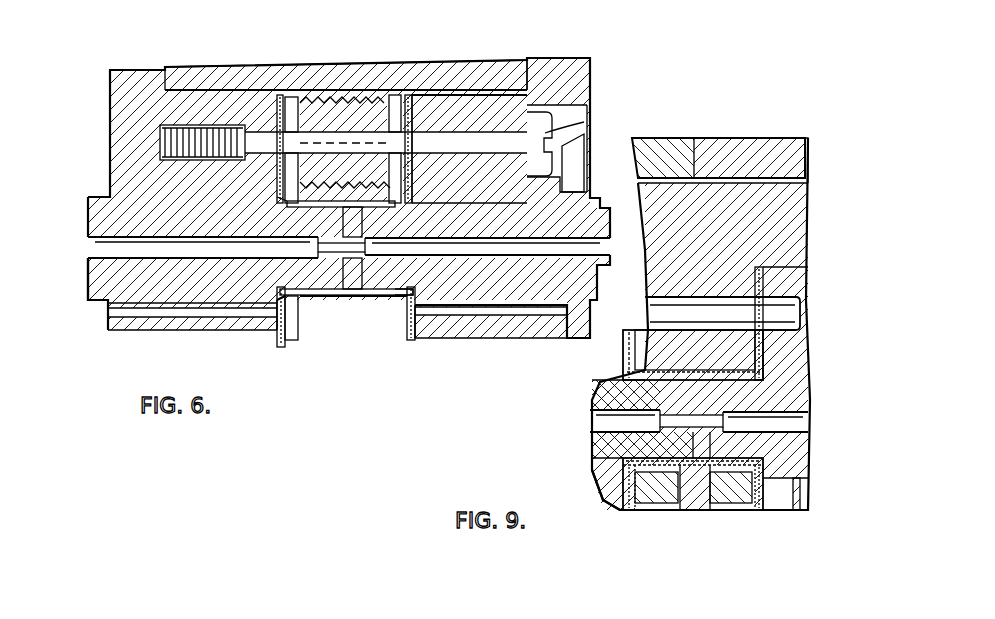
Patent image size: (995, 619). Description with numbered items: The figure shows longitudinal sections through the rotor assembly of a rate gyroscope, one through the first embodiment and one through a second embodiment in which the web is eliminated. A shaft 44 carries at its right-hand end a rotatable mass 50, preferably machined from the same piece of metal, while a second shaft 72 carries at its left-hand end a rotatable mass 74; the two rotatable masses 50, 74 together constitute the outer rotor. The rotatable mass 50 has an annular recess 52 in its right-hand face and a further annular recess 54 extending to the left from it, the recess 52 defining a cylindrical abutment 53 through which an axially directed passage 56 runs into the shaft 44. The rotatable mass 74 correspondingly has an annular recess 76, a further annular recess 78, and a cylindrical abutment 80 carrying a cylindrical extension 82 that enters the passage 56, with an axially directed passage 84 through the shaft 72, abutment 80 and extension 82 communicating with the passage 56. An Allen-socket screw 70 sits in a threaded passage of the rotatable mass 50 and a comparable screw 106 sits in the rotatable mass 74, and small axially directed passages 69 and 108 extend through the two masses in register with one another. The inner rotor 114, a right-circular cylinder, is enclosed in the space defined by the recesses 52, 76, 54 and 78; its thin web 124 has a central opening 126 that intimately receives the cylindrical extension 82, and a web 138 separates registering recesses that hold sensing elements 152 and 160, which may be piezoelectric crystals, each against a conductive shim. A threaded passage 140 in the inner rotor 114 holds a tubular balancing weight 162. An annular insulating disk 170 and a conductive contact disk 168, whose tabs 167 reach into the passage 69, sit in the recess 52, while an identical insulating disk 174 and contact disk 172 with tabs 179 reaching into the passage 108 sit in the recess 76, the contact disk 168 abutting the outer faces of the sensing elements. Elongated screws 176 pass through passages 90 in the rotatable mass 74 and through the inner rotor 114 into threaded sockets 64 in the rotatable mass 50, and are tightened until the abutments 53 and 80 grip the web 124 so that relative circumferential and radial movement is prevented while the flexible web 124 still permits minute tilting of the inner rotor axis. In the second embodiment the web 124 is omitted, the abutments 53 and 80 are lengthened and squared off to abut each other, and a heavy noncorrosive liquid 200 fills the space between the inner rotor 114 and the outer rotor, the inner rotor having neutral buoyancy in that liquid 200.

In FIG. 6, the shaft 44 is at (88, 300).
In FIG. 6, the rotatable mass 50 is at (106, 101).
In FIG. 9, the rotatable mass 50 is at (656, 134).
In FIG. 6, the annular recess 52 is at (279, 197).
In FIG. 9, the annular recess 52 is at (642, 400).
In FIG. 9, the cylindrical abutment 53 is at (700, 440).
In FIG. 6, the further annular recess 54 is at (177, 67).
In FIG. 6, the axially directed passage 56 is at (88, 250).
In FIG. 9, the axially directed passage 56 is at (600, 420).
In FIG. 6, the threaded sockets 64 is at (158, 141).
In FIG. 6, the axially directed passage 69 is at (158, 317).
In FIG. 9, the screw 70 is at (610, 497).
In FIG. 6, the shaft 72 is at (624, 193).
In FIG. 6, the rotatable mass 74 is at (592, 66).
In FIG. 9, the rotatable mass 74 is at (770, 140).
In FIG. 6, the annular recess 76 is at (390, 306).
In FIG. 9, the annular recess 76 is at (745, 367).
In FIG. 6, the further annular recess 78 is at (514, 72).
In FIG. 9, the cylindrical abutment 80 is at (760, 462).
In FIG. 6, the cylindrical extension 82 is at (322, 257).
In FIG. 9, the cylindrical extension 82 is at (688, 426).
In FIG. 6, the axially directed passage 84 is at (603, 252).
In FIG. 9, the axially directed passage 84 is at (765, 422).
In FIG. 6, the passages 90 is at (484, 158).
In FIG. 9, the screw 106 is at (790, 511).
In FIG. 6, the axially directed passage 108 is at (533, 315).
In FIG. 6, the inner rotor 114 is at (197, 82).
In FIG. 9, the inner rotor 114 is at (713, 193).
In FIG. 6, the web 124 is at (330, 297).
In FIG. 6, the opening 126 is at (357, 262).
In FIG. 9, the web 138 is at (703, 511).
In FIG. 6, the threaded passage 140 is at (323, 97).
In FIG. 9, the sensing element 152 is at (660, 503).
In FIG. 9, the sensing element 160 is at (729, 507).
In FIG. 6, the tubular balancing weight 162 is at (378, 97).
In FIG. 6, the tabs 167 is at (272, 310).
In FIG. 6, the contact disk 168 is at (290, 100).
In FIG. 6, the annular disk of insulating material 170 is at (279, 105).
In FIG. 6, the contact disk 172 is at (410, 98).
In FIG. 6, the annular disk of insulating material 174 is at (425, 98).
In FIG. 6, the elongated screws 176 is at (585, 120).
In FIG. 9, the elongated screws 176 is at (690, 306).
In FIG. 6, the tabs 179 is at (428, 316).
In FIG. 9, the heavy noncorrosive liquid 200 is at (695, 361).